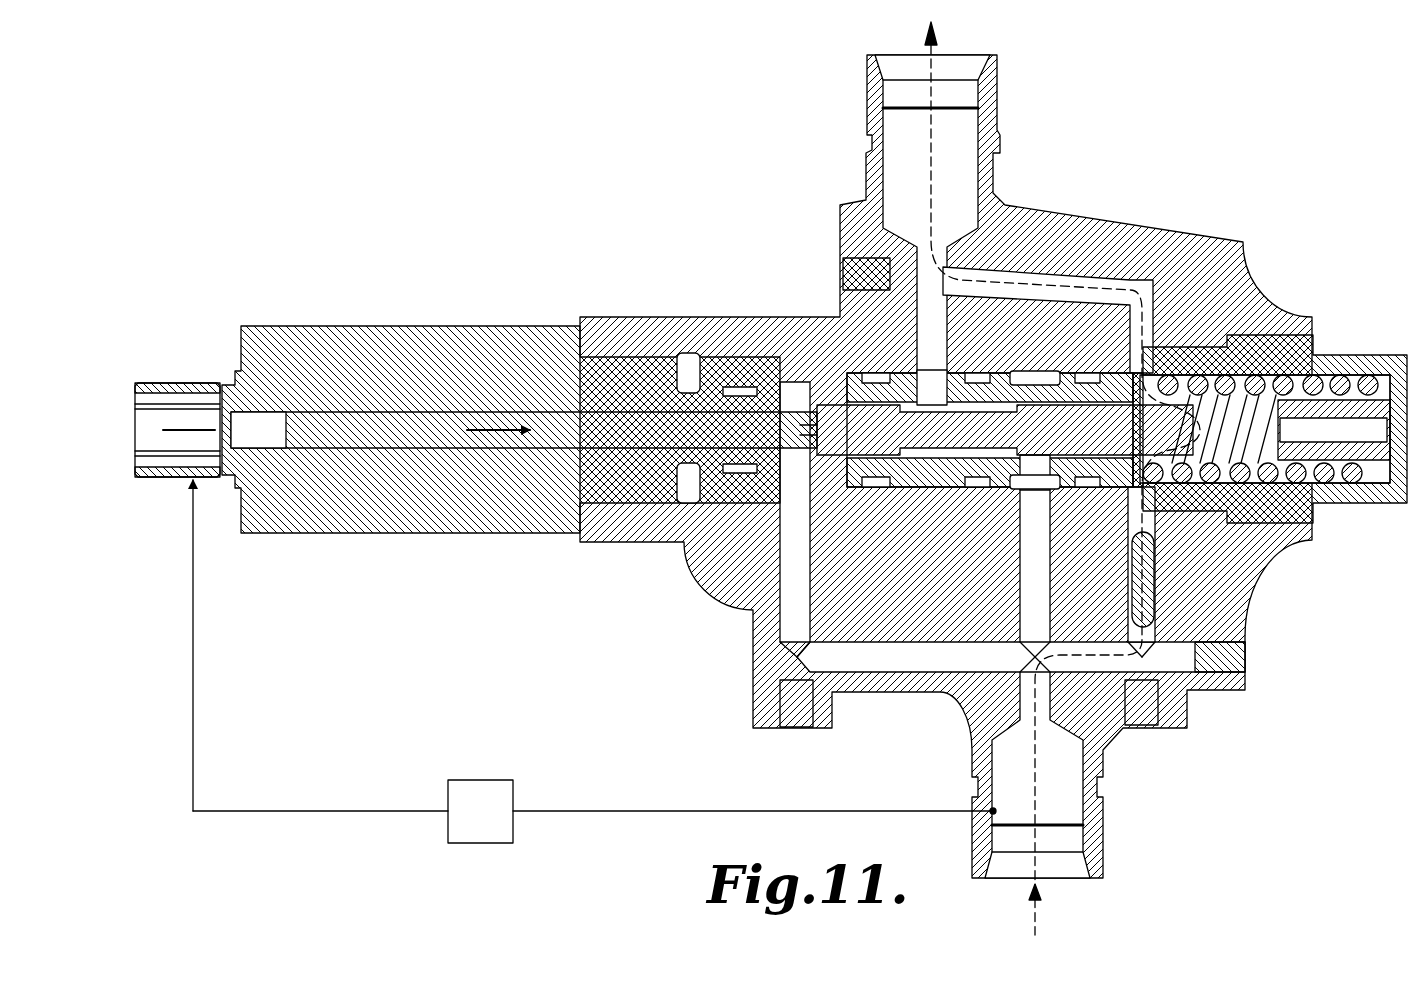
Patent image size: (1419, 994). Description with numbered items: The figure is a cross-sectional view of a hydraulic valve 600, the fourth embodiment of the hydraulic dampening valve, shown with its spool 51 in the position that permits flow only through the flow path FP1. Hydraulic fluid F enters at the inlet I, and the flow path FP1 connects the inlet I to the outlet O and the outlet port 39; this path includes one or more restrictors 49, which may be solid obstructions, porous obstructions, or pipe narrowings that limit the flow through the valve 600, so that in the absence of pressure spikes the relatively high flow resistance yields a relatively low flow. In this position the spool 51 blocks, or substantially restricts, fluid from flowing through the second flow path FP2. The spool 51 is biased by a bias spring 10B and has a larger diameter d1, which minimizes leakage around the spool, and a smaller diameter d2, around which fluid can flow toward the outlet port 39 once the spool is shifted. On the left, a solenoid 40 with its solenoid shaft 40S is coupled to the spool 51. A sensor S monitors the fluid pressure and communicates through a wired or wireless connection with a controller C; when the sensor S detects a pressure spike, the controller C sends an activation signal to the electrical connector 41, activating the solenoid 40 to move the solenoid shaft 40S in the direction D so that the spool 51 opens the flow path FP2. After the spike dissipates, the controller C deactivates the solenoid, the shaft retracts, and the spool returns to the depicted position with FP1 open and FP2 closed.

The hydraulic valve 600 is at (753, 475).
The solenoid 40 is at (333, 345).
The solenoid shaft 40S is at (348, 440).
The electrical connector 41 is at (158, 432).
The direction D is at (501, 413).
The spool 51 is at (840, 423).
The outlet port 39 is at (997, 104).
The outlet O is at (968, 58).
The flow of hydraulic fluid F is at (1062, 475).
The restrictor 49 is at (1067, 277).
The bias spring 10B is at (1340, 380).
The larger diameter d1 is at (867, 402).
The smaller diameter d2 is at (957, 412).
The flow path FP1 is at (1100, 653).
The flow path FP2 is at (1032, 583).
The sensor S is at (990, 811).
The inlet I is at (1010, 868).
The controller C is at (591, 661).